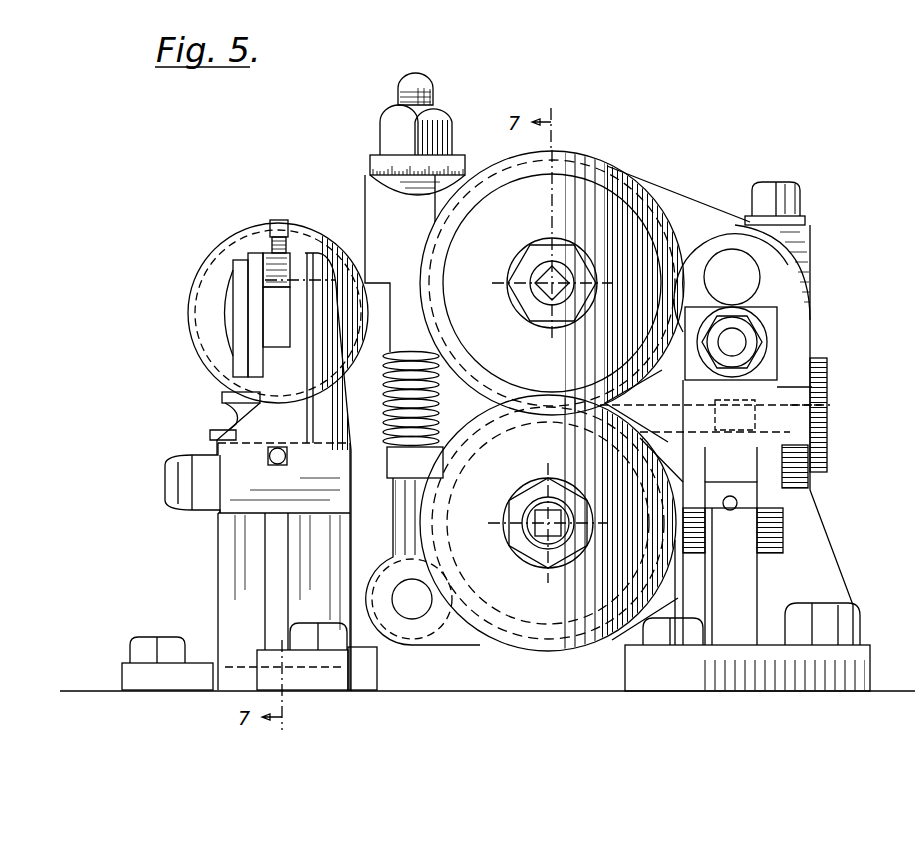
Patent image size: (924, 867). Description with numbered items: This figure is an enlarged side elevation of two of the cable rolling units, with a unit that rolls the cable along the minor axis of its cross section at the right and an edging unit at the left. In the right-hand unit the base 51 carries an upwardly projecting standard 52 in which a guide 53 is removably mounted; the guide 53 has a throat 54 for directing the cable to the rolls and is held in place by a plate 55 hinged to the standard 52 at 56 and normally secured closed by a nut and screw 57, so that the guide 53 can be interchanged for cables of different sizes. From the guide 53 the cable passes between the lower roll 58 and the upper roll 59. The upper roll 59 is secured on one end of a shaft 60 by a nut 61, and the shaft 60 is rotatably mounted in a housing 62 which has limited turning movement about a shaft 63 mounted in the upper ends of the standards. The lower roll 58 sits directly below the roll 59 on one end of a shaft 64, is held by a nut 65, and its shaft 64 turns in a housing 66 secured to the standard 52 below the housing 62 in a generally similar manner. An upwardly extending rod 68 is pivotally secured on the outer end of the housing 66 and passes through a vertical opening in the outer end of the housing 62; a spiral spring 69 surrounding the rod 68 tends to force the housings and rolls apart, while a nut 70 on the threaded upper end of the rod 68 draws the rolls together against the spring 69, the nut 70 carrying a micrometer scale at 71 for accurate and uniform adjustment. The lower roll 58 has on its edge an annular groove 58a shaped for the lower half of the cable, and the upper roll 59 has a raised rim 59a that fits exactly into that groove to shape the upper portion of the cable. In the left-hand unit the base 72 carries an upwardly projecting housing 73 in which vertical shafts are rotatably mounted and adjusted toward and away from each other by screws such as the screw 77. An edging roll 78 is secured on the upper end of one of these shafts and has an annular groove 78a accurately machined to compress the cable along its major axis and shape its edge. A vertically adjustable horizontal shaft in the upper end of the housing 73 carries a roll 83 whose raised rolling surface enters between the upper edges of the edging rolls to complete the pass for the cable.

The base 51 is at (870, 665).
The standard 52 is at (830, 545).
The guide 53 is at (828, 368).
The throat 54 is at (826, 408).
The plate 55 is at (828, 392).
The hinge 56 is at (787, 530).
The nut and screw 57 is at (734, 310).
The lower roll 58 is at (552, 652).
The annular groove 58a is at (514, 628).
The upper roll 59 is at (432, 248).
The raised rim 59a is at (608, 170).
The shaft 60 is at (525, 275).
The nut 61 is at (522, 304).
The housing 62 is at (668, 191).
The shaft 63 is at (728, 262).
The shaft 64 is at (530, 512).
The nut 65 is at (516, 522).
The housing 66 is at (673, 594).
The rod 68 is at (394, 512).
The spiral spring 69 is at (346, 398).
The nut 70 is at (383, 126).
The micrometer scale 71 is at (372, 160).
The base 72 is at (122, 666).
The housing 73 is at (218, 567).
The screw 77 is at (270, 461).
The edging roll 78 is at (222, 395).
The annular groove 78a is at (225, 412).
The roll 83 is at (233, 246).